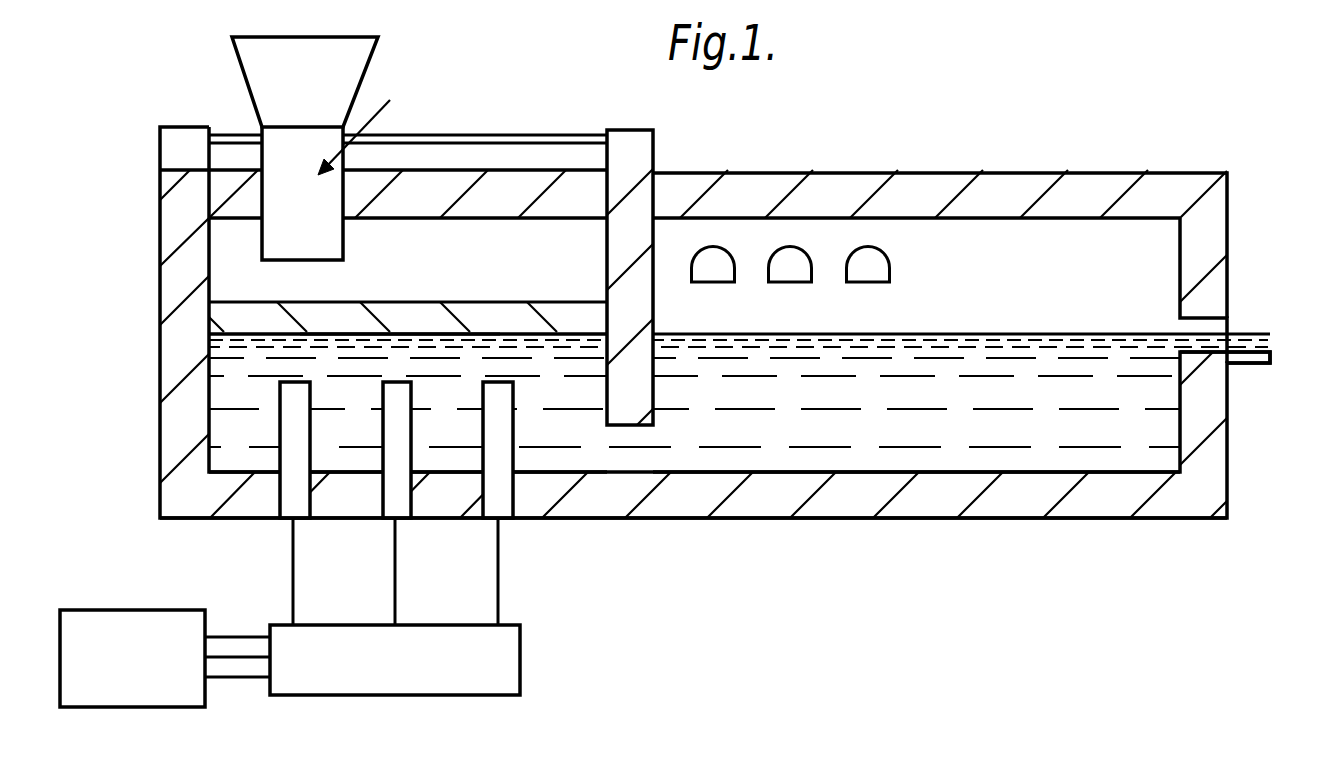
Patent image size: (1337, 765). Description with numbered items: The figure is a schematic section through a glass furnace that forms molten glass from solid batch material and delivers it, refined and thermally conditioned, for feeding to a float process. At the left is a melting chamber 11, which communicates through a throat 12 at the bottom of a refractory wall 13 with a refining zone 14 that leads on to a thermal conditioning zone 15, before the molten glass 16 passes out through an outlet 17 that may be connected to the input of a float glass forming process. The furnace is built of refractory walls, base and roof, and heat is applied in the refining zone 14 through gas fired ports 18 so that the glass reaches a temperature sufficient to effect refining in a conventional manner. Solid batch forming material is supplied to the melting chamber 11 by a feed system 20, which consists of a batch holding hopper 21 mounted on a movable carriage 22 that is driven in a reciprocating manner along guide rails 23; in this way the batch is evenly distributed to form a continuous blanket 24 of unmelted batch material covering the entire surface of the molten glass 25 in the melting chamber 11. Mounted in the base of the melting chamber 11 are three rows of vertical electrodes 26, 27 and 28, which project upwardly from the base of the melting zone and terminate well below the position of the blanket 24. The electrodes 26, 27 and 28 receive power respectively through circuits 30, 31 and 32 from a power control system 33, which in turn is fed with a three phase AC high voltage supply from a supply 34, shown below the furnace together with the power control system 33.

The melting chamber 11 is at (217, 430).
The throat 12 is at (630, 457).
The refractory wall 13 is at (633, 203).
The refining zone 14 is at (788, 443).
The thermal conditioning zone 15 is at (1108, 452).
The molten glass 16 is at (960, 375).
The outlet 17 is at (1243, 347).
The gas fired ports 18 is at (722, 277).
The feed system 20 is at (369, 128).
The batch holding hopper 21 is at (348, 63).
The movable carriage 22 is at (330, 250).
The guide rails 23 is at (512, 137).
The blanket 24 is at (465, 310).
The molten glass 25 is at (360, 348).
The vertical electrode 26 is at (288, 504).
The vertical electrode 27 is at (393, 505).
The vertical electrode 28 is at (495, 505).
The circuit 30 is at (293, 597).
The circuit 31 is at (395, 605).
The circuit 32 is at (498, 607).
The power control system 33 is at (520, 668).
The supply 34 is at (165, 707).